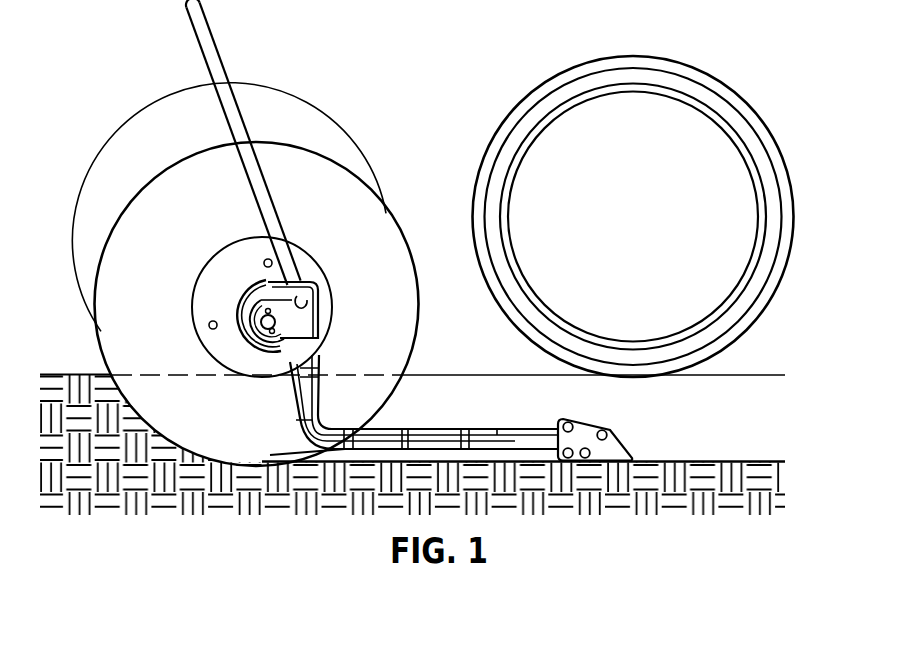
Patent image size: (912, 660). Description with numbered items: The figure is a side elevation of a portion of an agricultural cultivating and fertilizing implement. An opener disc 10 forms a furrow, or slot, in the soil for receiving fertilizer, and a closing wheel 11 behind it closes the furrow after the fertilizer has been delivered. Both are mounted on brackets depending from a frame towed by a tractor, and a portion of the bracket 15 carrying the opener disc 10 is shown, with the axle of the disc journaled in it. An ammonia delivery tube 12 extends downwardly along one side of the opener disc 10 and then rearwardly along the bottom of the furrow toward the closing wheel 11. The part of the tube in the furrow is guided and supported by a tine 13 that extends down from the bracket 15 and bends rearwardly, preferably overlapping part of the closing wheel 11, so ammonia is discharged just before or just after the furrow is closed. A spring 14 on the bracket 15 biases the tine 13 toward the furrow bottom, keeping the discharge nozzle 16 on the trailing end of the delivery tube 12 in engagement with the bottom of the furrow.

The opener disc 10 is at (158, 202).
The closing wheel 11 is at (787, 168).
The ammonia delivery tube 12 is at (232, 57).
The tine 13 is at (435, 442).
The spring 14 is at (234, 339).
The bracket 15 is at (323, 318).
The discharge nozzle 16 is at (612, 432).